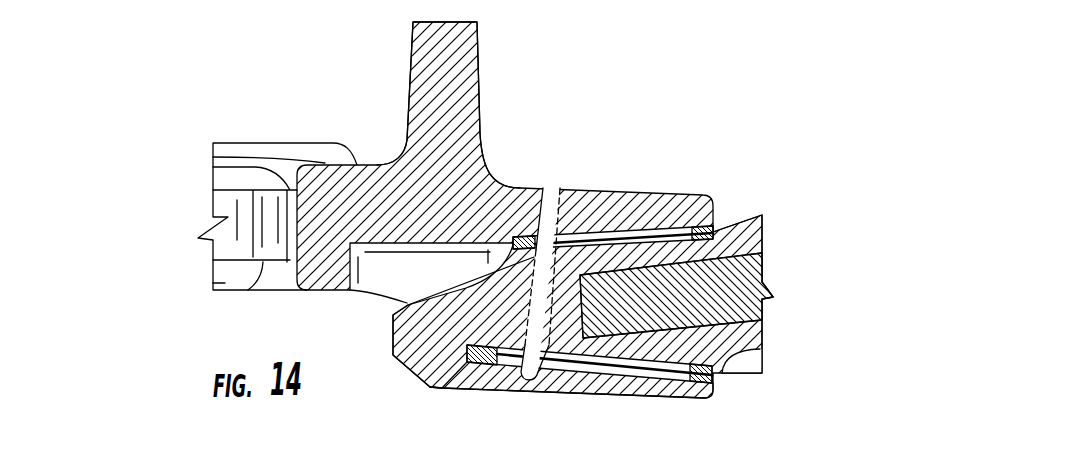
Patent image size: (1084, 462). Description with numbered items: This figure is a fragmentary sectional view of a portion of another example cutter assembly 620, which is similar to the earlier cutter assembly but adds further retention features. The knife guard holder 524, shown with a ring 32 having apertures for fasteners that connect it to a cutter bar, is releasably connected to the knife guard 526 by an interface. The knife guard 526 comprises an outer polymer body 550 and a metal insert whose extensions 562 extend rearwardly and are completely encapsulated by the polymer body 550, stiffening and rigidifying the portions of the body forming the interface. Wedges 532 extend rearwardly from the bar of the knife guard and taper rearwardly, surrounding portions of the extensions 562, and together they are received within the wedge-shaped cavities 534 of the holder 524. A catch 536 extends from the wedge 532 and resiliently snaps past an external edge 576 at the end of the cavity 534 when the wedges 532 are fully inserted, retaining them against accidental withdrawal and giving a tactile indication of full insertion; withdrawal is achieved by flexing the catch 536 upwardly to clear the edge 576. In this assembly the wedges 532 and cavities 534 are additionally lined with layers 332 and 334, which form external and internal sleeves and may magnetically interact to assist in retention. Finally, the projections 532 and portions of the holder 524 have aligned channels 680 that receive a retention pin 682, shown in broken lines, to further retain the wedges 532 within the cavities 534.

The cutter assembly 620 is at (169, 143).
The ring 32 is at (245, 150).
The knife guard holder 524 is at (482, 80).
The aligned channels 680 is at (563, 205).
The layer 334 is at (627, 230).
The layer 332 is at (670, 227).
The outer polymer body 550 is at (750, 220).
The extensions 562 is at (742, 292).
The knife guard 526 is at (762, 371).
The wedges 532 is at (722, 375).
The wedge-shaped cavities 534 is at (548, 380).
The retention pin 682 is at (520, 330).
The external edge 576 is at (465, 383).
The catch 536 is at (420, 375).